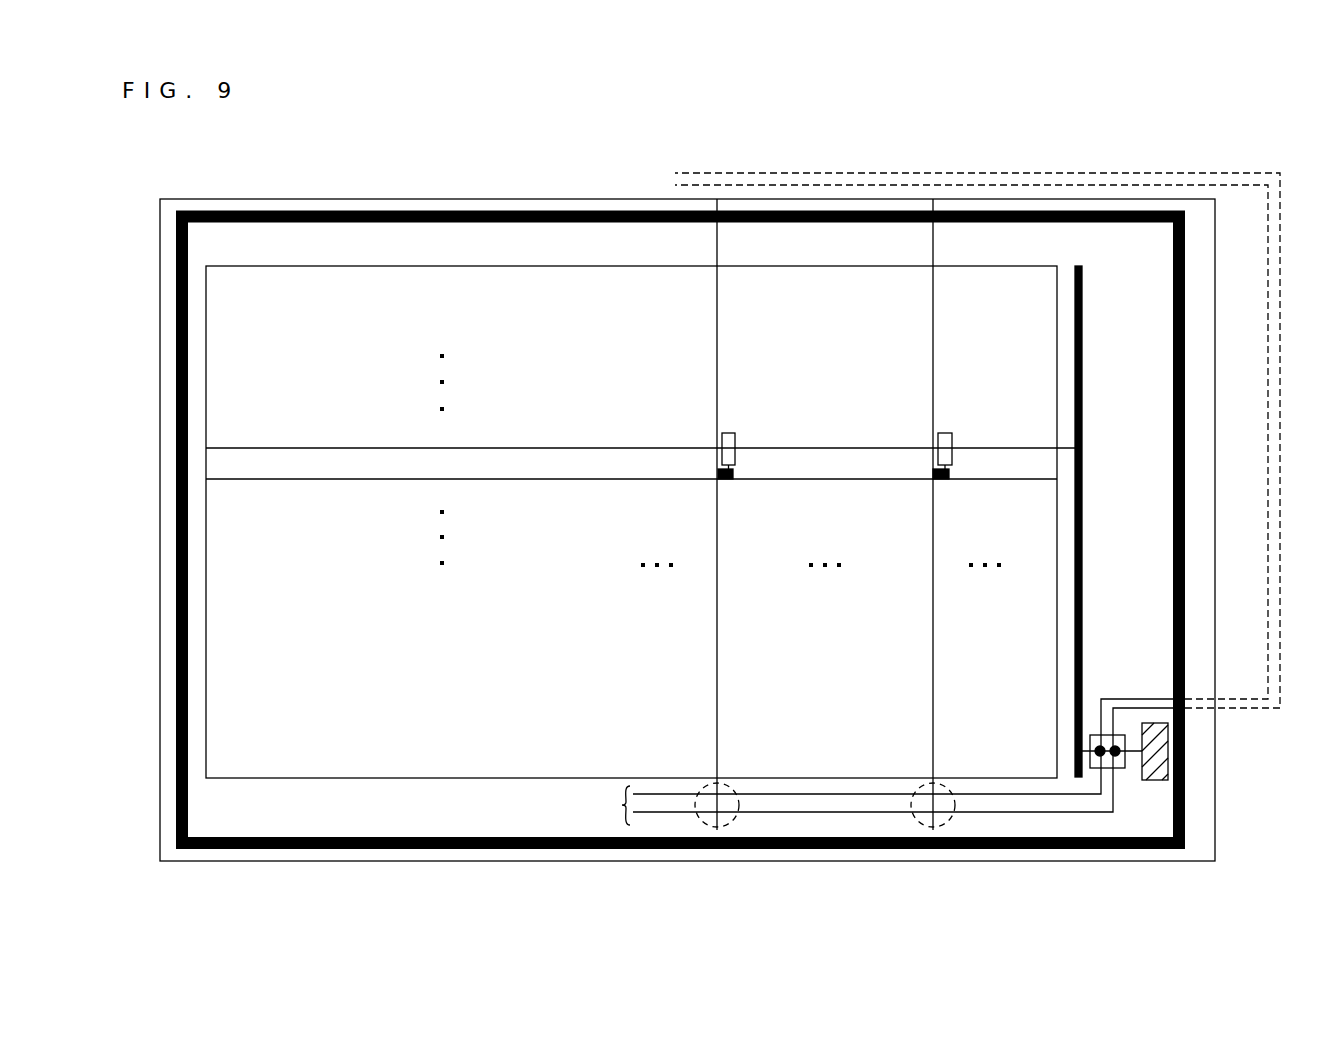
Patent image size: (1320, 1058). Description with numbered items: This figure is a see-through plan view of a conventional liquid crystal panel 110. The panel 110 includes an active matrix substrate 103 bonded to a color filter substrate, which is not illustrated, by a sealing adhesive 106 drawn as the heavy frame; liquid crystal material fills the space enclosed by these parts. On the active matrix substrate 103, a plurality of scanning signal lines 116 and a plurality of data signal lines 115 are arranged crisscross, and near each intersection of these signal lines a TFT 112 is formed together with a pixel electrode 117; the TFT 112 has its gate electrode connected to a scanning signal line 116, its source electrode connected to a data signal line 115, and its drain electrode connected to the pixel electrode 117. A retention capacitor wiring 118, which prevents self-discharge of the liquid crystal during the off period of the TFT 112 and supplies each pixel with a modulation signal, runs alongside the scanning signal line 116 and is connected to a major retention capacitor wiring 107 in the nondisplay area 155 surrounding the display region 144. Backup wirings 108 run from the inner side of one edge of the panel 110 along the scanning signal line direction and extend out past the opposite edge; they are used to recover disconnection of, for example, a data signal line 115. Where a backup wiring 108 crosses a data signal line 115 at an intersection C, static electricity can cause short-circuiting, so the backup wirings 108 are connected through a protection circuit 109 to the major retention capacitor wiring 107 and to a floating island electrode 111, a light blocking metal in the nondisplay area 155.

The liquid crystal panel 110 is at (599, 186).
The active matrix substrate 103 is at (472, 198).
The nondisplay area 155 is at (288, 245).
The sealing adhesive 106 is at (1186, 451).
The display region 144 is at (557, 266).
The major retention capacitor wiring 107 is at (1083, 350).
The data signal line 115 is at (718, 347).
The retention capacitor wiring 118 is at (333, 447).
The scanning signal line 116 is at (358, 481).
The pixel electrode 117 is at (733, 431).
The TFT 112 is at (735, 474).
The backup wiring 108 is at (931, 499).
The protection circuit 109 is at (1092, 735).
The floating island electrode 111 is at (1150, 781).
The intersection C is at (722, 783).